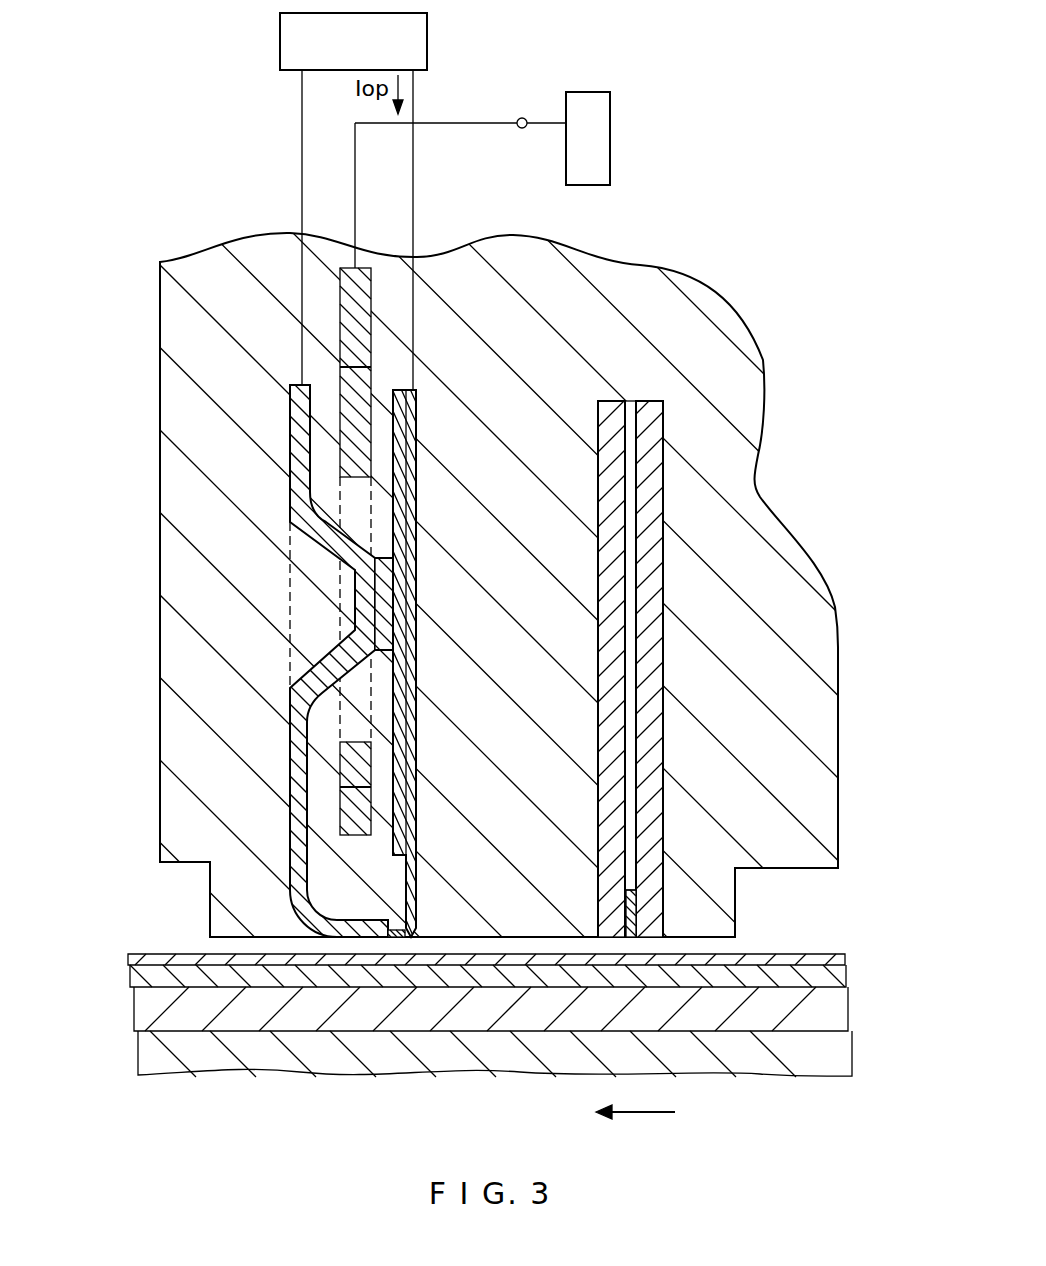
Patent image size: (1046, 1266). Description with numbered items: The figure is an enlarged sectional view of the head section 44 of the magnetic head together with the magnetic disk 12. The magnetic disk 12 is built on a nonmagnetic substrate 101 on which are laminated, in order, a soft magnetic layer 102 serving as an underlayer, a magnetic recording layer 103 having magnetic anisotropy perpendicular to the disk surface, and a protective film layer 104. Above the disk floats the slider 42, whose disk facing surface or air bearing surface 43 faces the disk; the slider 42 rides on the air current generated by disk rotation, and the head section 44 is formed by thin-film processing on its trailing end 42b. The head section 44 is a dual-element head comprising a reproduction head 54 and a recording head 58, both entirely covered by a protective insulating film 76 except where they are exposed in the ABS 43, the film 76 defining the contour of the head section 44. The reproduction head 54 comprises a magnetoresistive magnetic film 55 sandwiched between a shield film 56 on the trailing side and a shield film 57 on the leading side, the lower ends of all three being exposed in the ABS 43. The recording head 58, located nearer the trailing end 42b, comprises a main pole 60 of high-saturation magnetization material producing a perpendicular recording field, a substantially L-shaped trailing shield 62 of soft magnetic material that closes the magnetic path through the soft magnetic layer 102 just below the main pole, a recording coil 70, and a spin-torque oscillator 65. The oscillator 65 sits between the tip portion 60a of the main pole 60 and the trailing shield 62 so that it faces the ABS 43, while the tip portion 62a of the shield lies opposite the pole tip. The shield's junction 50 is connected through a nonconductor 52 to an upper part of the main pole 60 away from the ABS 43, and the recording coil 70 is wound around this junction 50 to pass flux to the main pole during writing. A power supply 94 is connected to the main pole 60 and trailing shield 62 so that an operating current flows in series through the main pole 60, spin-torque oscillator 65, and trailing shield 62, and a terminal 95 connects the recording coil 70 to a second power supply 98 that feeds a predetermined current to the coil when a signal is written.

The magnetic disk 12 is at (456, 1045).
The slider 42 is at (742, 373).
The trailing end 42b is at (160, 492).
The disk facing surface (air bearing surface, ABS) 43 is at (755, 872).
The head section 44 is at (642, 268).
The junction 50 is at (364, 604).
The nonconductor 52 is at (356, 572).
The reproduction head 54 is at (677, 395).
The magnetic film 55 is at (632, 902).
The shield film 56 is at (655, 607).
The shield film 57 is at (622, 565).
The recording head 58 is at (243, 233).
The main pole 60 is at (418, 792).
The tip portion 60a is at (412, 937).
The trailing shield (return pole) 62 is at (286, 703).
The tip portion 62a is at (336, 937).
The spin-torque oscillator 65 is at (397, 937).
The recording coil 70 is at (340, 397).
The protective insulating film 76 is at (172, 272).
The power supply 94 is at (280, 38).
The terminal 95 is at (523, 117).
The second power supply 98 is at (610, 110).
The substrate 101 is at (145, 1060).
The soft magnetic layer 102 is at (140, 1004).
The magnetic recording layer 103 is at (132, 969).
The protective film layer 104 is at (130, 957).